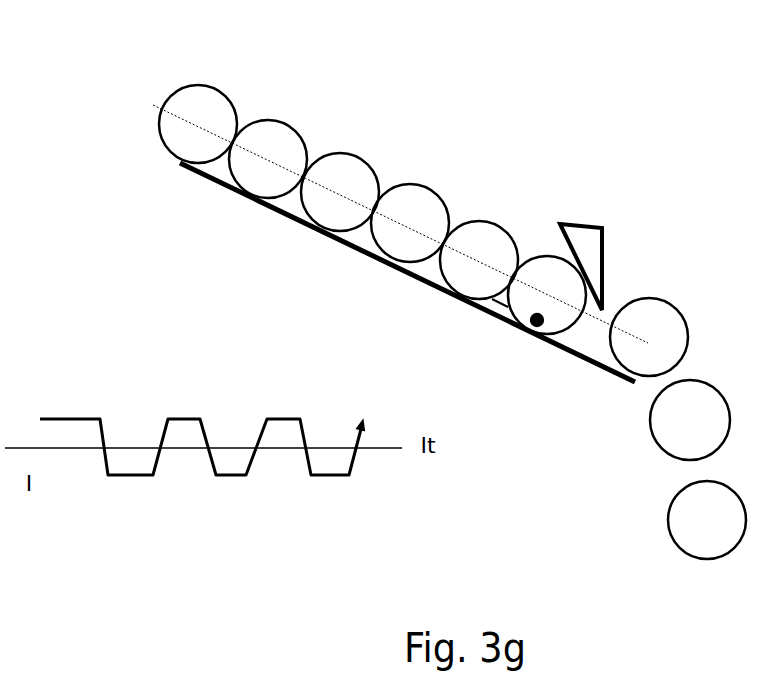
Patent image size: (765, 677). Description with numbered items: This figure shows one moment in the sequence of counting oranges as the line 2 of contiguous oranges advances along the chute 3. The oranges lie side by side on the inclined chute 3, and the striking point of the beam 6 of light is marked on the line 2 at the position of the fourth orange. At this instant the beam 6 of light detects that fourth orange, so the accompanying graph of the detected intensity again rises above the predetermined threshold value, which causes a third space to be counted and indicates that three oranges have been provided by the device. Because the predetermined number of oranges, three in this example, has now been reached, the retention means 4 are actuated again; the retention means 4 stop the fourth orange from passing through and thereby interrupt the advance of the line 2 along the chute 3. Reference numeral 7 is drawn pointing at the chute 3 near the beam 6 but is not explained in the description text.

The line of contiguous oranges 2 is at (153, 65).
The chute 3 is at (593, 362).
The retention means 4 is at (593, 255).
The beam of light 6 is at (535, 327).
The track surface position 7 is at (500, 305).